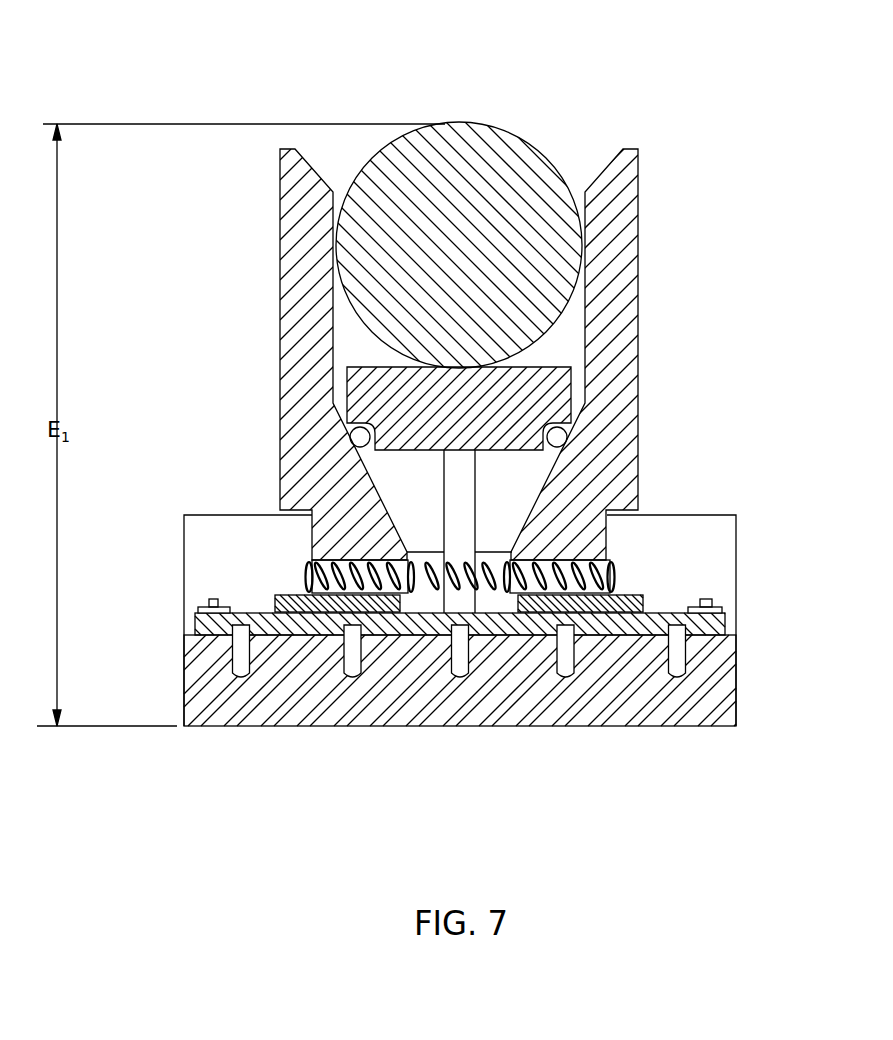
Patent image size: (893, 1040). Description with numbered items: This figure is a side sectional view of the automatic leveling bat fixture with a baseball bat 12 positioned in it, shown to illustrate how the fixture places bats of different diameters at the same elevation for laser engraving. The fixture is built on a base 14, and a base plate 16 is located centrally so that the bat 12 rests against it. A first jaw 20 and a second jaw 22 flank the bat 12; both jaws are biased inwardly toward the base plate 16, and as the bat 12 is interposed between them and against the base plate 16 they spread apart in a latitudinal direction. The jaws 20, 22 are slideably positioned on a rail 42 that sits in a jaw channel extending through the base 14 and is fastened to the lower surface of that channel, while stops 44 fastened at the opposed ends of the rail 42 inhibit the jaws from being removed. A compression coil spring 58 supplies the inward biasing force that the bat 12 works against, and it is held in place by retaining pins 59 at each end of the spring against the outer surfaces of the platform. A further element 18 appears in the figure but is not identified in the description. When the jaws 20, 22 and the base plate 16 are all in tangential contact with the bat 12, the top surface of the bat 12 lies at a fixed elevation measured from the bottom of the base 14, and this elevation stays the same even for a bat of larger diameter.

The baseball bat 12 is at (503, 138).
The base 14 is at (478, 727).
The base plate 16 is at (563, 386).
The stem 18 is at (457, 495).
The first jaw 20 is at (295, 280).
The second jaw 22 is at (632, 270).
The rail 42 is at (197, 624).
The stops 44 is at (203, 608).
The compression coil spring 58 is at (613, 570).
The retaining pins 59 is at (307, 575).